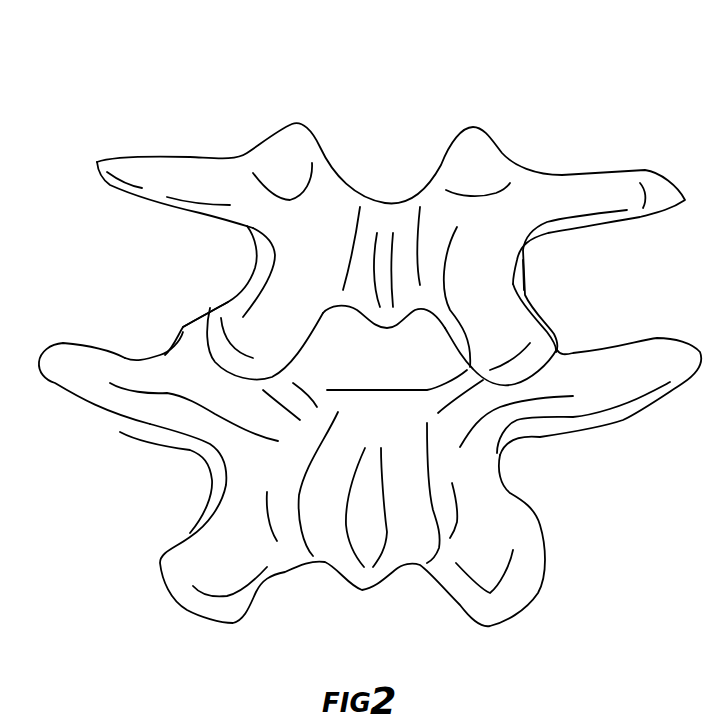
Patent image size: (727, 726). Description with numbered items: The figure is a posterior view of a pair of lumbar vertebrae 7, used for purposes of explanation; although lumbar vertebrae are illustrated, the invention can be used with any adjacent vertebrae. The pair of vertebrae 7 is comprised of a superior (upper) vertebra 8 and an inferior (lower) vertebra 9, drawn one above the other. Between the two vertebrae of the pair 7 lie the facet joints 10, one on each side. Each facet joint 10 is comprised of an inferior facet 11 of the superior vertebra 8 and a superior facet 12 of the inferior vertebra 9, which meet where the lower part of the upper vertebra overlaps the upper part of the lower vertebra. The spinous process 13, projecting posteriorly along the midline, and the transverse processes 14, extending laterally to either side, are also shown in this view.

The pair of vertebrae 7 is at (104, 112).
The superior vertebra 8 is at (322, 103).
The inferior vertebra 9 is at (172, 620).
The facet joints 10 is at (195, 295).
The inferior facet 11 is at (247, 320).
The superior facet 12 is at (185, 335).
The spinous process 13 is at (368, 560).
The transverse processes 14 is at (57, 373).